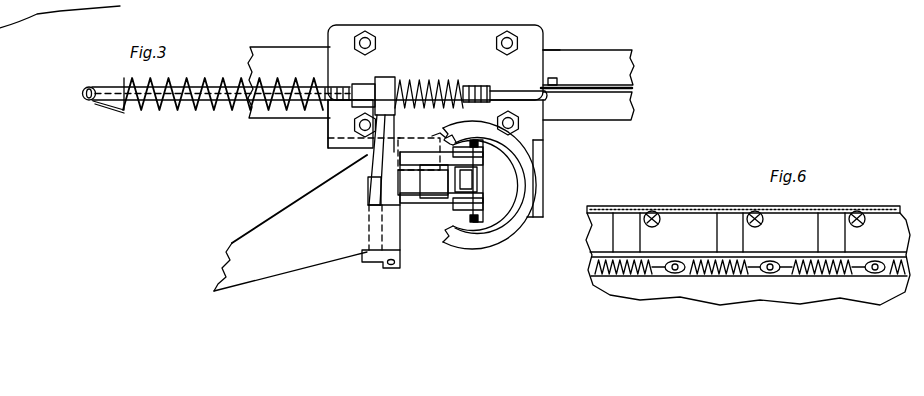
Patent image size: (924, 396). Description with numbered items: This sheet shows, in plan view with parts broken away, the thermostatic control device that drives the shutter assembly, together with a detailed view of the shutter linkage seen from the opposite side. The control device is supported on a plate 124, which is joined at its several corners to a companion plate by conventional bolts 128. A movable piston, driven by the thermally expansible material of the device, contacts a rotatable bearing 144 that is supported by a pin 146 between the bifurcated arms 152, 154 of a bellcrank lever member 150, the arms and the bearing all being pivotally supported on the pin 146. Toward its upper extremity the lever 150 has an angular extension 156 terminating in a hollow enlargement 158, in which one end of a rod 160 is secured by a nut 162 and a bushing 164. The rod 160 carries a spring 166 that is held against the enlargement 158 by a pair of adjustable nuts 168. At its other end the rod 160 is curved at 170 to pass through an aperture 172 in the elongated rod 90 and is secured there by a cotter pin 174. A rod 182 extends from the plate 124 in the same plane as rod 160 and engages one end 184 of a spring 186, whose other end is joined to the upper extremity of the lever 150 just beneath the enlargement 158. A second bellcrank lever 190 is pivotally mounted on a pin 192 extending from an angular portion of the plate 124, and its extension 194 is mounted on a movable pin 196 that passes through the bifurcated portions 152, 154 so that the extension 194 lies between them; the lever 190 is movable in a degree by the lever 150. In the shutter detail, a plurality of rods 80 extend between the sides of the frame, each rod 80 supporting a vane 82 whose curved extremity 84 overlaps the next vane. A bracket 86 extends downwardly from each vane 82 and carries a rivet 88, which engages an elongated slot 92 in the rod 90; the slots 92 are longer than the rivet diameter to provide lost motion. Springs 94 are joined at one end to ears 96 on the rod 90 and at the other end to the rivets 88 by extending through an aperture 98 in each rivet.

In FIG. 3, the plate 124 is at (533, 31).
In FIG. 3, the bolts 128 is at (368, 33).
In FIG. 3, the adjustable nuts 168 is at (510, 116).
In FIG. 3, the angular extension 156 is at (336, 144).
In FIG. 3, the nut 162 is at (338, 76).
In FIG. 3, the rod 182 is at (118, 76).
In FIG. 3, the end of spring 184 is at (94, 101).
In FIG. 3, the spring 186 is at (205, 112).
In FIG. 3, the bushing 164 is at (356, 85).
In FIG. 3, the hollow enlargement 158 is at (384, 78).
In FIG. 3, the spring 166 is at (430, 82).
In FIG. 3, the rod 160 is at (491, 90).
In FIG. 3, the elongated rod 90 is at (632, 82).
In FIG. 3, the curved end 170 is at (556, 96).
In FIG. 3, the aperture 172 is at (554, 80).
In FIG. 3, the cotter pin 174 is at (552, 50).
In FIG. 3, the bifurcated bellcrank lever member 150 is at (369, 176).
In FIG. 3, the pin 192 is at (403, 262).
In FIG. 3, the second bellcrank lever 190 is at (233, 240).
In FIG. 3, the extension 194 is at (418, 184).
In FIG. 3, the movable pin 196 is at (440, 136).
In FIG. 3, the bifurcated arm 152 is at (483, 162).
In FIG. 3, the bifurcated arm 154 is at (483, 199).
In FIG. 3, the rotatable bearing 144 is at (480, 179).
In FIG. 3, the pin 146 is at (477, 230).
In FIG. 6, the vane 82 is at (682, 207).
In FIG. 6, the rods 80 is at (664, 194).
In FIG. 6, the curved extremity 84 is at (766, 194).
In FIG. 6, the aperture 98 is at (680, 274).
In FIG. 6, the elongated slots 92 is at (672, 262).
In FIG. 6, the springs 94 is at (732, 274).
In FIG. 6, the ears 96 is at (762, 274).
In FIG. 6, the bracket 86 is at (748, 262).
In FIG. 6, the rivet 88 is at (790, 262).